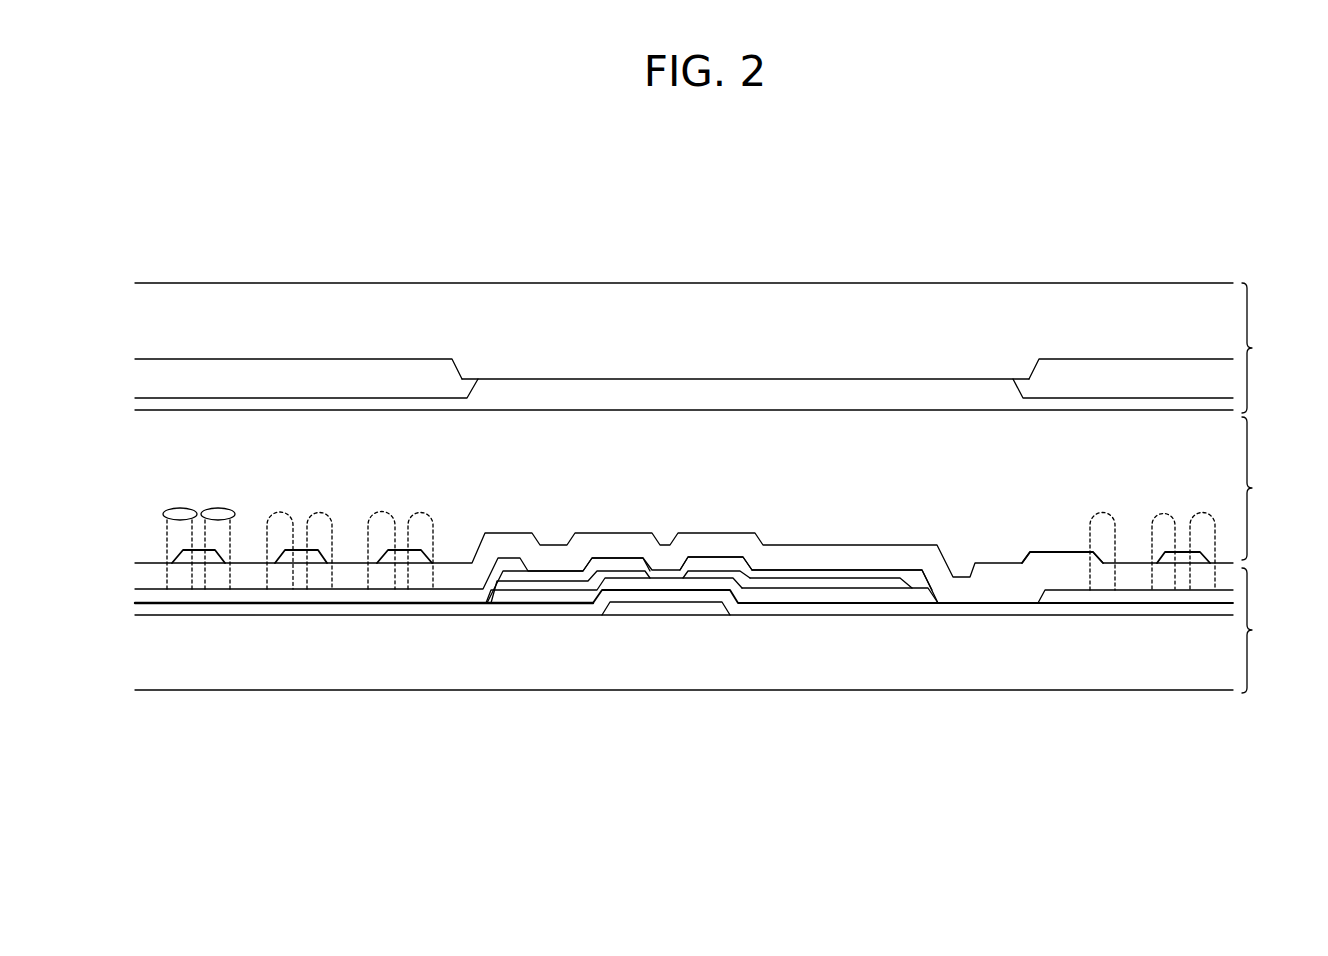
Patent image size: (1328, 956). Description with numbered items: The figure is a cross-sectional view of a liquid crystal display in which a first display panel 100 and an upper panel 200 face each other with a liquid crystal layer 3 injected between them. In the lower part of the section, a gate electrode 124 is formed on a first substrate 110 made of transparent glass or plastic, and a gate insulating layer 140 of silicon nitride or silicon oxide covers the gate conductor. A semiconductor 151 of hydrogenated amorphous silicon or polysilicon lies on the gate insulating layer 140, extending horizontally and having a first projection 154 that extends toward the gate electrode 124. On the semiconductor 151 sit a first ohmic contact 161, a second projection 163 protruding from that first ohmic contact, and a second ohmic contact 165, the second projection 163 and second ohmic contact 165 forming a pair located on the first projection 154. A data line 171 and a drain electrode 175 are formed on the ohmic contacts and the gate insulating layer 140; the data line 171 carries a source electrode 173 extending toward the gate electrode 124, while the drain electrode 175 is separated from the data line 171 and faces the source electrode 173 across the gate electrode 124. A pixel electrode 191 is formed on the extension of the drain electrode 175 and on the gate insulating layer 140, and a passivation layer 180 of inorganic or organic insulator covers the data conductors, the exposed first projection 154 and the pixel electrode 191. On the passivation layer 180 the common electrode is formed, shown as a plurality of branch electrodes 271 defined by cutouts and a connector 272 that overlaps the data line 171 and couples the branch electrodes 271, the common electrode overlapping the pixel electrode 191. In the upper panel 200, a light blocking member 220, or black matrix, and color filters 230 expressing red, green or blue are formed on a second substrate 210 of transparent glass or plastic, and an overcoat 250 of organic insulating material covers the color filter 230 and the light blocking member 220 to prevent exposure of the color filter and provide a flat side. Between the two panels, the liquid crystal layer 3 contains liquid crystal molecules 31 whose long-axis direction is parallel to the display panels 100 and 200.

The liquid crystal layer 3 is at (1257, 488).
The liquid crystal molecules 31 is at (172, 511).
The first display panel 100 is at (1270, 630).
The first substrate 110 is at (748, 666).
The gate electrode 124 is at (680, 607).
The gate insulating layer 140 is at (990, 608).
The semiconductor 151 is at (830, 595).
The first projection 154 is at (638, 582).
The first ohmic contact 161 is at (898, 585).
The second projection 163 is at (697, 573).
The second ohmic contact 165 is at (549, 583).
The data line 171 is at (867, 577).
The source electrode 173 is at (732, 562).
The drain electrode 175 is at (517, 577).
The passivation layer 180 is at (1082, 577).
The pixel electrode 191 is at (348, 593).
The upper panel 200 is at (1269, 348).
The second substrate 210 is at (1069, 318).
The light blocking member 220 is at (735, 372).
The color filter 230 is at (341, 375).
The overcoat 250 is at (894, 398).
The branch electrode 271 is at (198, 557).
The connector 272 is at (1068, 556).